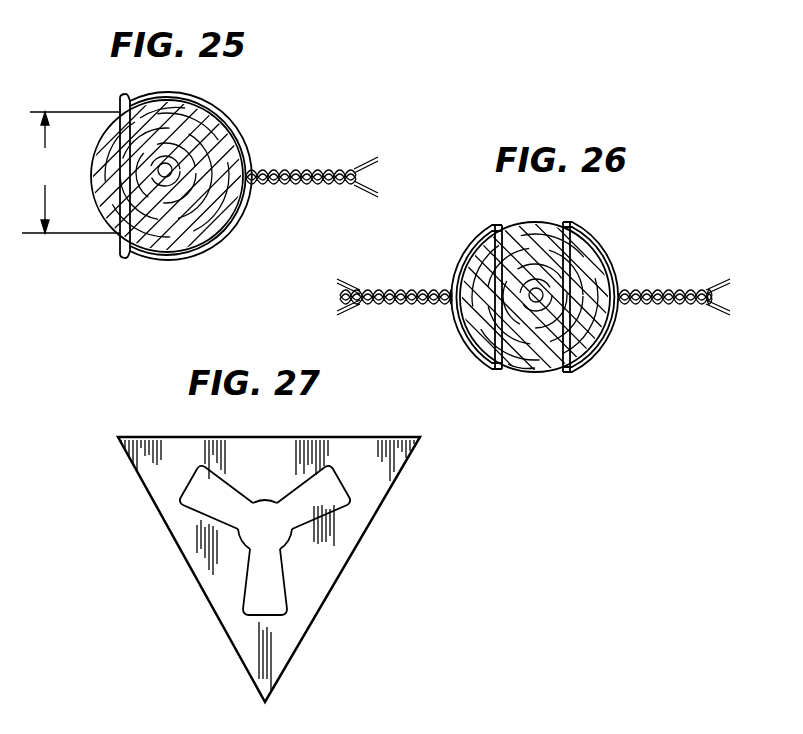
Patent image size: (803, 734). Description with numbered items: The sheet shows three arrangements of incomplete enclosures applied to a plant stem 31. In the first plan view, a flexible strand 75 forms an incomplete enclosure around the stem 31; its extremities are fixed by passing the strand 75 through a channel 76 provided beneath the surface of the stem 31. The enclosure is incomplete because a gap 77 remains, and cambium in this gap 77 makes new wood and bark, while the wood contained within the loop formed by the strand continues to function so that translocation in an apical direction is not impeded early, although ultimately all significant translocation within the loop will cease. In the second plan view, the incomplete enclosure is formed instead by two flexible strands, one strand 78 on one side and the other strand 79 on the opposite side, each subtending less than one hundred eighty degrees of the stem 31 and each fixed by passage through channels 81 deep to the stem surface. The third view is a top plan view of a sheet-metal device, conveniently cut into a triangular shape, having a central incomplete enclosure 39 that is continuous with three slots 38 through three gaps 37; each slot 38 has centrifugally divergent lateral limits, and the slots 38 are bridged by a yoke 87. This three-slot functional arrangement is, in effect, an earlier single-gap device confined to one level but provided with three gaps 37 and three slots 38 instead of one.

In FIG. 25, the stem 31 is at (226, 222).
In FIG. 26, the stem 31 is at (540, 238).
In FIG. 25, the flexible strand 75 is at (232, 122).
In FIG. 25, the channel 76 is at (165, 120).
In FIG. 25, the gap 77 is at (71, 172).
In FIG. 26, the left clip 78 is at (461, 262).
In FIG. 26, the flexible strands 79 is at (612, 274).
In FIG. 26, the channels 81 is at (546, 354).
In FIG. 27, the yoke 87 is at (280, 652).
In FIG. 27, the incomplete enclosure 39 is at (276, 537).
In FIG. 27, the slots 38 is at (198, 498).
In FIG. 27, the gaps 37 is at (290, 510).